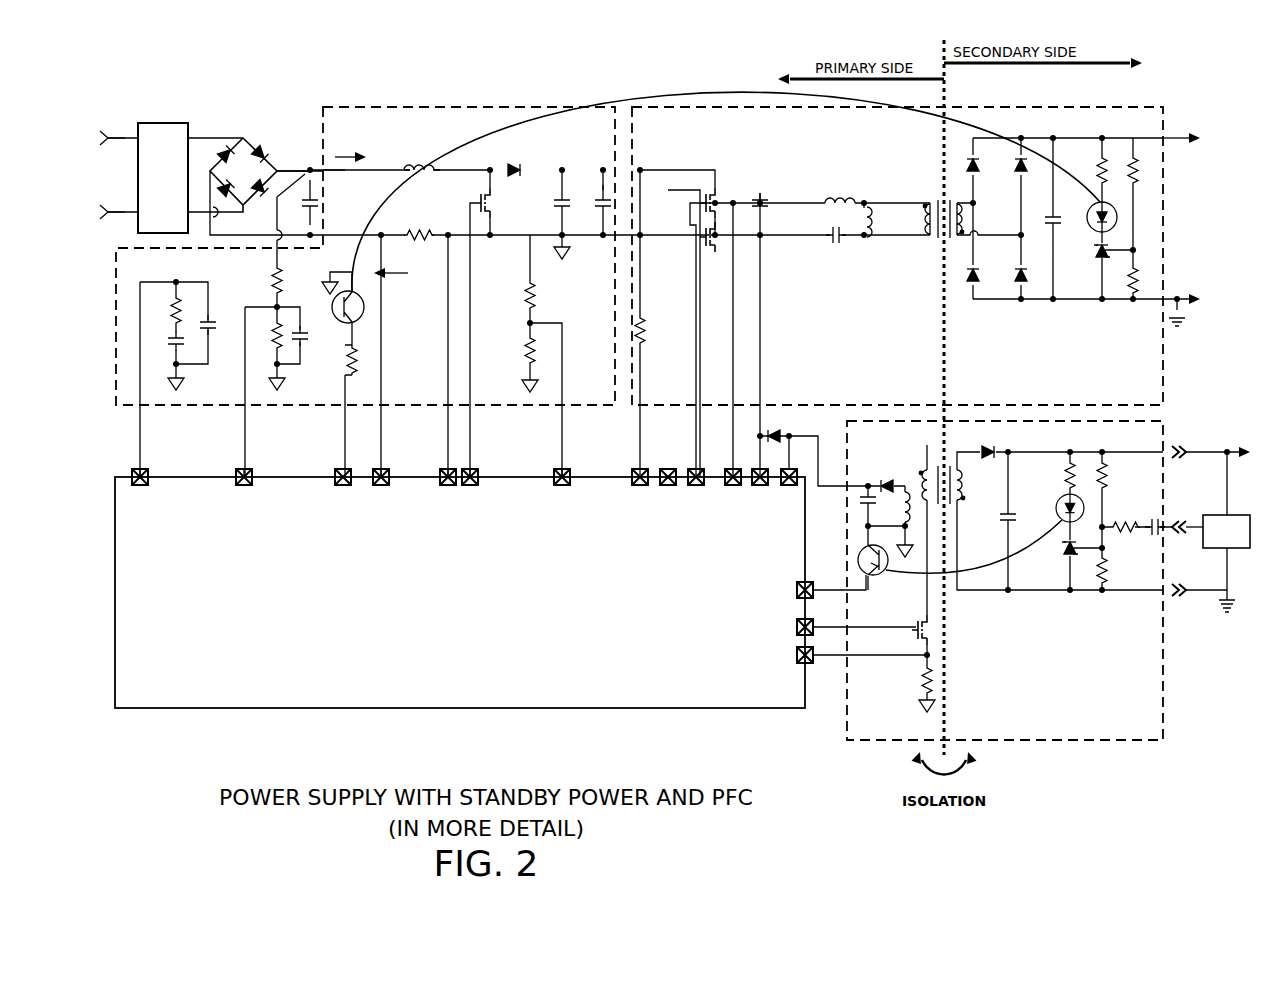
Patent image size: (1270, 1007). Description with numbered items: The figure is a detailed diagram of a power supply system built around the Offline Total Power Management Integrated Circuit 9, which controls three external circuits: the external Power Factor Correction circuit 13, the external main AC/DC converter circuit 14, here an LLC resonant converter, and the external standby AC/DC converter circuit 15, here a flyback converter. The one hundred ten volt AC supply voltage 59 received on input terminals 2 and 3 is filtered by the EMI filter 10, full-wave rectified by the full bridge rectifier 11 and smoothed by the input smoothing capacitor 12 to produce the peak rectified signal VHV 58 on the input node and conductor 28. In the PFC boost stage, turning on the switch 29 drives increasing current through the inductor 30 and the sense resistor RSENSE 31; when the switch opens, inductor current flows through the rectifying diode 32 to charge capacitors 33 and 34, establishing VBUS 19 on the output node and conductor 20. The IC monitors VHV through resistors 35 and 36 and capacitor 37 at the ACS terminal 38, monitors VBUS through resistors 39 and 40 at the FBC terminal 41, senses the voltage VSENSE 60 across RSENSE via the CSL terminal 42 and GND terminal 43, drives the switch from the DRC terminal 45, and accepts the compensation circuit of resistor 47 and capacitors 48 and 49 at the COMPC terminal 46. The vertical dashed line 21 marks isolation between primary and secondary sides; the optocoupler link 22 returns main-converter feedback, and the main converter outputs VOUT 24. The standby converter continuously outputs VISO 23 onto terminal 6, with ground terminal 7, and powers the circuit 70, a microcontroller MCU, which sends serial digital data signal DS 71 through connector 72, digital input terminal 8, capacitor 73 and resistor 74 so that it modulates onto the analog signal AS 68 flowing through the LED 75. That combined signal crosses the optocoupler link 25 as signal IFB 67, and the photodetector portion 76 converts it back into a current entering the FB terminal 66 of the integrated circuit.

The AC supply voltage input terminal 2 is at (115, 137).
The AC supply voltage input terminal 3 is at (115, 213).
The second voltage output terminal 6 is at (1173, 446).
The ground terminal 7 is at (1169, 601).
The digital input terminal 8 is at (1167, 528).
The Offline Total Power Management Integrated Circuit 9 is at (464, 588).
The EMI filter 10 is at (167, 116).
The full bridge rectifier 11 is at (258, 128).
The input smoothing capacitor 12 is at (309, 204).
The external Power Factor Correction circuit 13 is at (468, 106).
The external main AC/DC converter circuit 14 is at (1060, 263).
The external standby AC/DC converter circuit 15 is at (1064, 590).
The VBUS supply voltage 19 is at (690, 160).
The output node and conductor 20 is at (600, 164).
The vertical dashed line 21 is at (942, 298).
The optocoupler link 22 is at (703, 95).
The VISO voltage supply signal 23 is at (1226, 440).
The VOUT voltage supply signal 24 is at (1178, 128).
The optocoupler link 25 is at (950, 600).
The input node and conductor 28 is at (352, 172).
The switch 29 is at (498, 202).
The inductor 30 is at (438, 168).
The sense resistor RSENSE 31 is at (423, 230).
The rectifying diode 32 is at (540, 168).
The capacitor 33 is at (567, 202).
The capacitor 34 is at (598, 196).
The resistor 35 is at (271, 281).
The resistor 36 is at (271, 334).
The capacitor 37 is at (304, 340).
The ACS terminal 38 is at (238, 473).
The resistor 39 is at (523, 300).
The resistor 40 is at (523, 357).
The FBC terminal 41 is at (569, 473).
The CSL terminal 42 is at (374, 473).
The GND terminal 43 is at (441, 473).
The DRC terminal 45 is at (478, 473).
The COMPC terminal 46 is at (132, 473).
The compensation circuit resistor 47 is at (171, 308).
The compensation circuit capacitor 48 is at (170, 354).
The compensation circuit capacitor 49 is at (212, 317).
The VHV signal 58 is at (349, 140).
The AC supply voltage 59 is at (109, 175).
The VSENSE voltage 60 is at (379, 372).
The FB terminal 66 is at (802, 581).
The signal IFB 67 is at (838, 576).
The analog signal AS 68 is at (1057, 486).
The circuit such as microcontroller MCU 70 is at (1232, 514).
The serial digital data signal DS 71 is at (1172, 552).
The connector 72 is at (1184, 513).
The capacitor 73 is at (1153, 520).
The resistor 74 is at (1120, 532).
The LED of the optocoupler 75 is at (1055, 511).
The photodetector portion of the optocoupler 76 is at (876, 578).